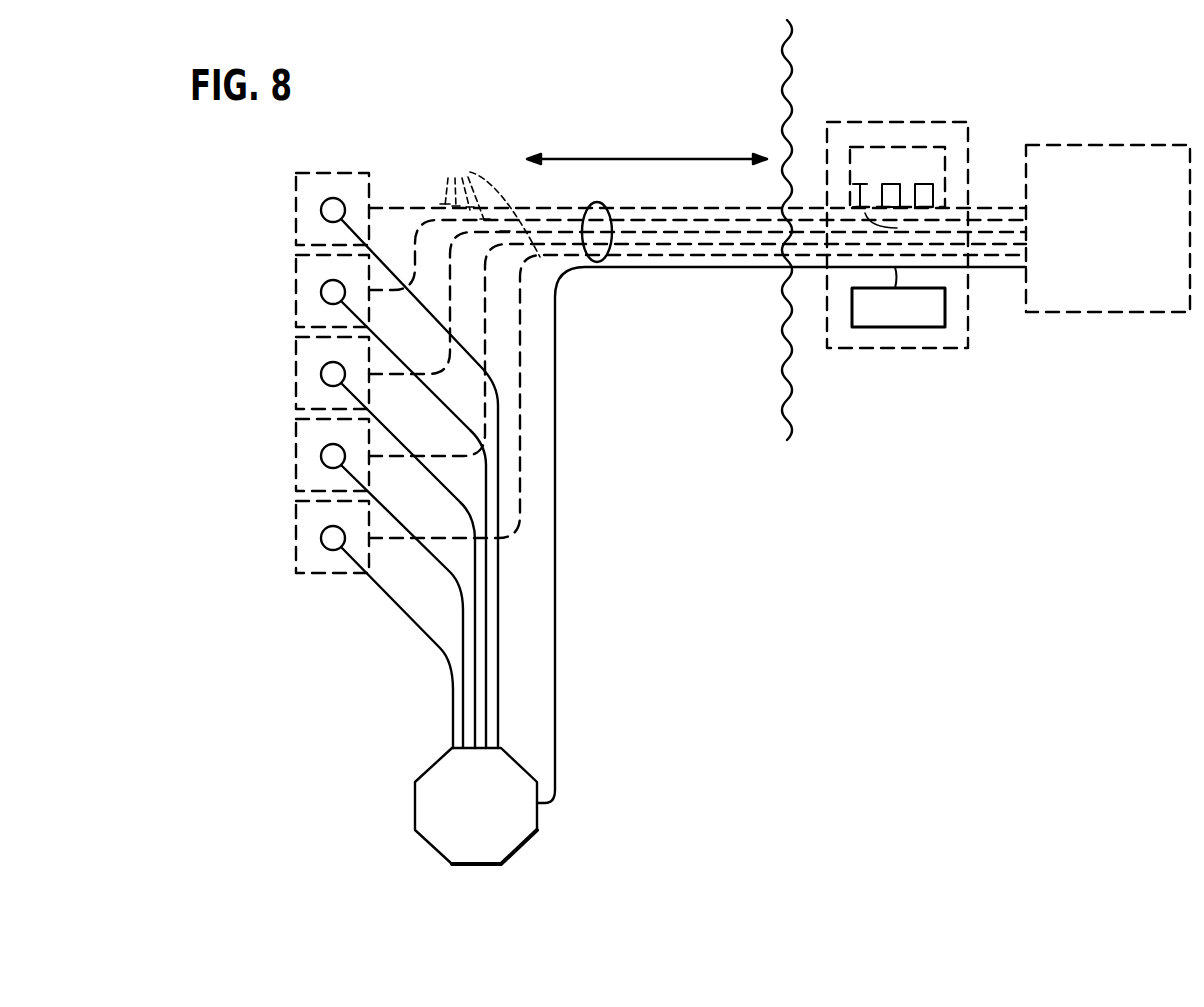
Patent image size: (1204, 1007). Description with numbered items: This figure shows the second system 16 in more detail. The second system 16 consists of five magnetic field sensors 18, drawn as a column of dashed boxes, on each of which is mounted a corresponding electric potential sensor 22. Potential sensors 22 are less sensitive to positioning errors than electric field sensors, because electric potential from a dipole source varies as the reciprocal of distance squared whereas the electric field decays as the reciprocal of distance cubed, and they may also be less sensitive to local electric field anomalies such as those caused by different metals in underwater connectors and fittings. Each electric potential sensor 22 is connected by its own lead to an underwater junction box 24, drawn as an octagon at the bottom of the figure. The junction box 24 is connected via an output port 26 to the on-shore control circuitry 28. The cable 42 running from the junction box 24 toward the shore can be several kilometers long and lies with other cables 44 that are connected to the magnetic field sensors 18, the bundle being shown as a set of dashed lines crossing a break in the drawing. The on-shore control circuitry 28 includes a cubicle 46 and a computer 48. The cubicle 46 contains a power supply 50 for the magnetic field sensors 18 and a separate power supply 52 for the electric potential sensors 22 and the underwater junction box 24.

The second system 16 is at (682, 147).
The magnetic field sensor 18 is at (292, 226).
The electric potential sensor 22 is at (345, 212).
The underwater junction box 24 is at (475, 874).
The output port 26 is at (550, 818).
The on-shore control circuitry 28 is at (1108, 283).
The cable 42 is at (656, 270).
The other cables 44 is at (490, 204).
The cubicle 46 is at (860, 121).
The computer 48 is at (1137, 312).
The power supply 50 is at (892, 120).
The power supply 52 is at (898, 327).